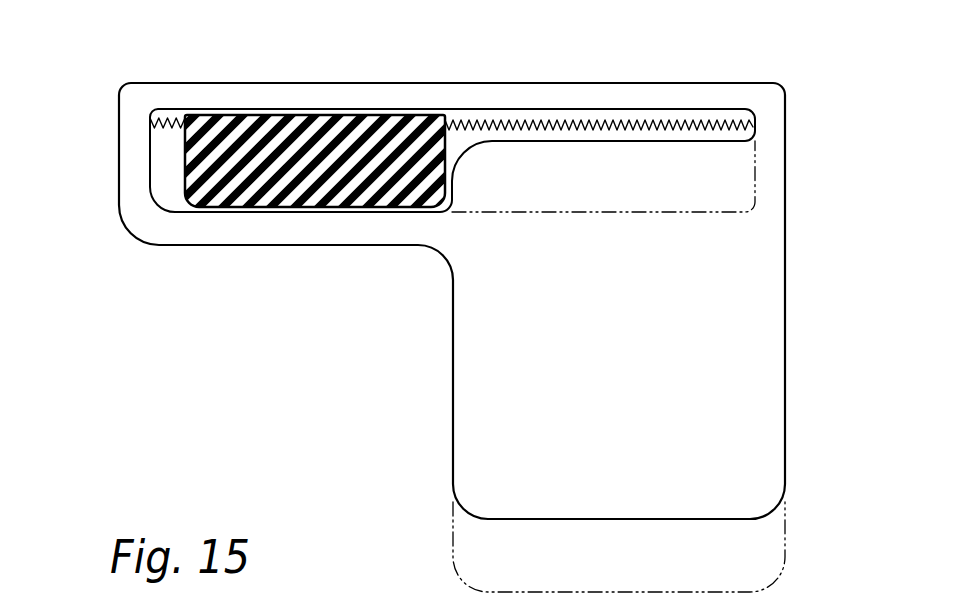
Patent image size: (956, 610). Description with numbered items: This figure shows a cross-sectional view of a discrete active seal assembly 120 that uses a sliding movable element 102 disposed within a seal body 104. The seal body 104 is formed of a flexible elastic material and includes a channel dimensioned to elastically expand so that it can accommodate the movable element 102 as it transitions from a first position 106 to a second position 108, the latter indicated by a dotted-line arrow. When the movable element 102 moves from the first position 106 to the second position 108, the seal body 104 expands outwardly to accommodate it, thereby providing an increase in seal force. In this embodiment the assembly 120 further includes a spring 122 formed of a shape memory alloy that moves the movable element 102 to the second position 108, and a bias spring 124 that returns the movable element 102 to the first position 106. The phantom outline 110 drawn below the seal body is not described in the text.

The sliding movable element 102 is at (302, 123).
The seal body 104 is at (787, 352).
The first position 106 is at (280, 228).
The second position 108 is at (571, 233).
The extended housing portion 110 is at (430, 536).
The discrete active seal assembly 120 is at (88, 112).
The spring 122 is at (610, 122).
The bias spring 124 is at (167, 123).